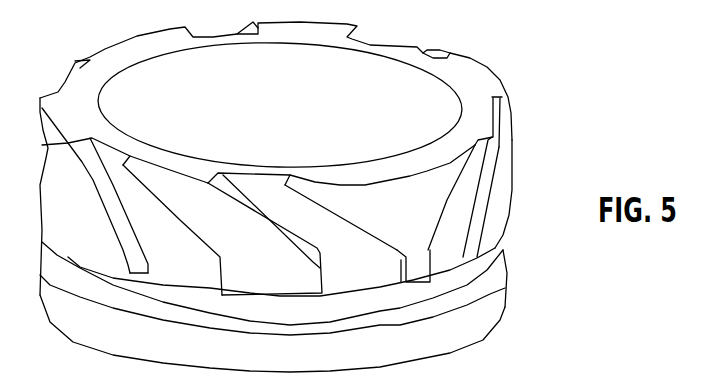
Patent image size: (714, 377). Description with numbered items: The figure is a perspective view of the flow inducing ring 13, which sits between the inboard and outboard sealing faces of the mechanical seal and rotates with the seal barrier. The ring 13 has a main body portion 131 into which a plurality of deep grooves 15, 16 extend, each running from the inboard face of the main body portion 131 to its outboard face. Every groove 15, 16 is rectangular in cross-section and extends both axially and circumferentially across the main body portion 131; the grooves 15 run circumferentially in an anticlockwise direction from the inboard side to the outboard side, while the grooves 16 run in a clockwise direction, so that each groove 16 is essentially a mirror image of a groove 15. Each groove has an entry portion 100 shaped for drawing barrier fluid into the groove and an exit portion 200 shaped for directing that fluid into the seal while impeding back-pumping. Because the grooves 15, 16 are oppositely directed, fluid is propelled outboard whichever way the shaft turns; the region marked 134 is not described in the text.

The flow inducing ring 13 is at (490, 57).
The groove 16 is at (507, 133).
The groove 15 is at (83, 157).
The exit portion 200 is at (220, 270).
The entry portion 100 is at (265, 188).
The main body portion 131 is at (492, 222).
The bottom ring 134 is at (468, 312).